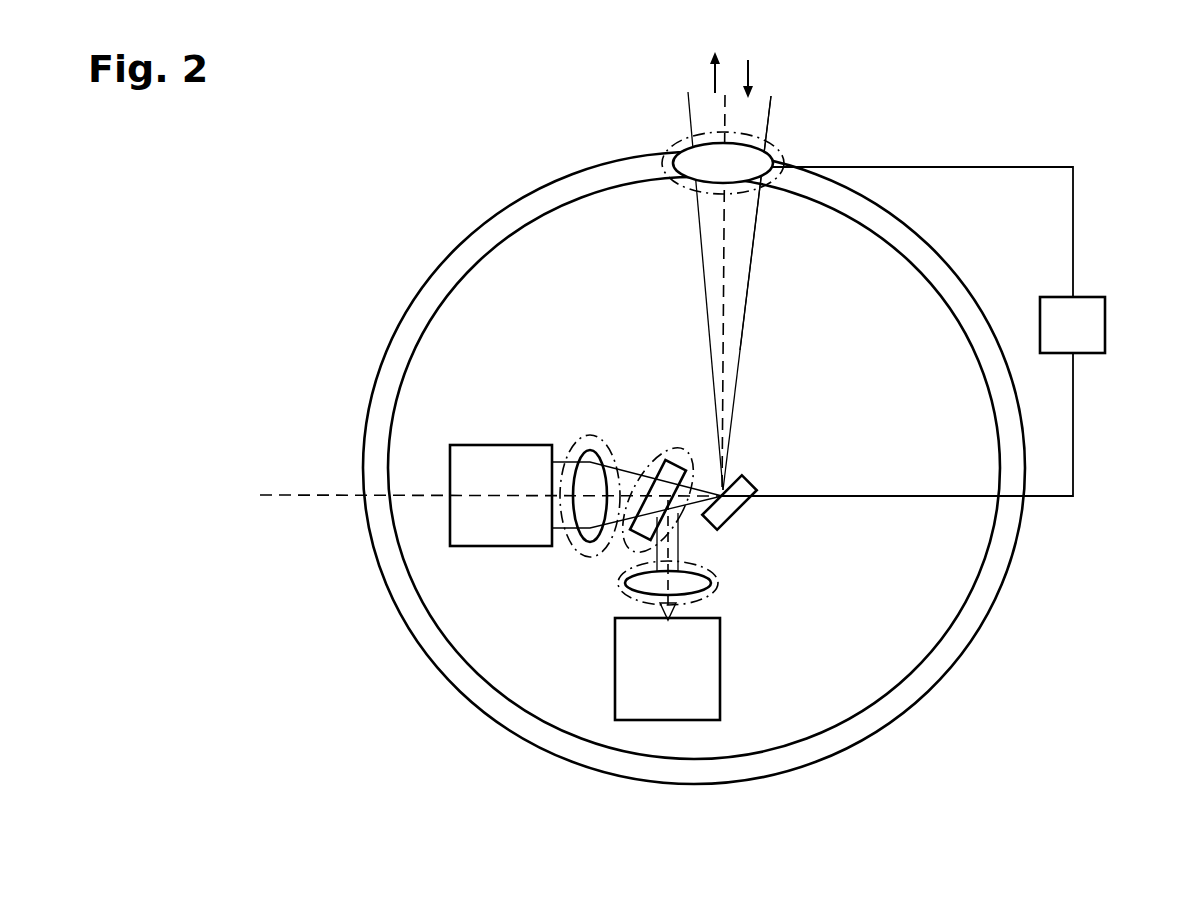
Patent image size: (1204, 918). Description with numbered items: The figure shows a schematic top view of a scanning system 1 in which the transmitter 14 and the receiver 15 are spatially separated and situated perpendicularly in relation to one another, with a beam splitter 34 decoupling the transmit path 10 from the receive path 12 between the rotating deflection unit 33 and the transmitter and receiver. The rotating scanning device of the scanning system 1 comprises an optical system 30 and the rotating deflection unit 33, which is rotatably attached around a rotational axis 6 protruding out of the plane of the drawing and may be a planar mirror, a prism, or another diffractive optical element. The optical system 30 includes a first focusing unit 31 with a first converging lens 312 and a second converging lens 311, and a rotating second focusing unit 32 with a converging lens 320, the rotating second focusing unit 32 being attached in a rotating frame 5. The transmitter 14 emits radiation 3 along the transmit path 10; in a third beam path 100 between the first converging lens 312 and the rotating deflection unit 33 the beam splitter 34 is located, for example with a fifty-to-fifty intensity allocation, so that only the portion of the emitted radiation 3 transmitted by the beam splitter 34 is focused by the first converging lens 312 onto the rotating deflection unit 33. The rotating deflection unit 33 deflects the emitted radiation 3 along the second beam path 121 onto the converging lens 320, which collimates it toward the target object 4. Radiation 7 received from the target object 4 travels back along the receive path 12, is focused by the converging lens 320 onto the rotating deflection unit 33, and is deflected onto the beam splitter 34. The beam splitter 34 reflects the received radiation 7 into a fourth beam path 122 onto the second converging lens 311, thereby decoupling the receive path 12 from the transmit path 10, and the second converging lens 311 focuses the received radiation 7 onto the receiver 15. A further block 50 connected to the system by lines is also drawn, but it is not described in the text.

The scanning system 1 is at (300, 204).
The emitted radiation 3 is at (553, 441).
The target object 4 is at (746, 49).
The rotating frame 5 is at (508, 222).
The rotational axis 6 is at (742, 510).
The received radiation 7 is at (748, 118).
The transmit path 10 is at (623, 455).
The receive path 12 is at (738, 266).
The transmitter 14 is at (473, 466).
The receiver 15 is at (667, 705).
The optical system 30 is at (682, 136).
The first focusing unit 31 is at (570, 450).
The rotating second focusing unit 32 is at (666, 149).
The rotating deflection unit 33 is at (743, 476).
The beam splitter 34 is at (683, 452).
The control unit 50 is at (1090, 323).
The third beam path 100 is at (650, 457).
The second beam path 121 is at (735, 307).
The fourth beam path 122 is at (673, 552).
The second converging lens 311 is at (722, 590).
The first converging lens 312 is at (582, 448).
The converging lens 320 is at (747, 146).